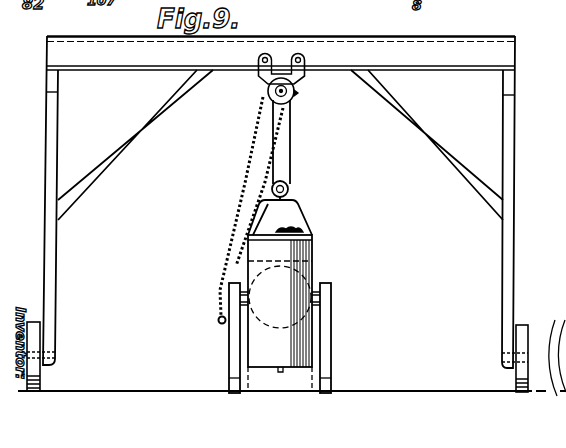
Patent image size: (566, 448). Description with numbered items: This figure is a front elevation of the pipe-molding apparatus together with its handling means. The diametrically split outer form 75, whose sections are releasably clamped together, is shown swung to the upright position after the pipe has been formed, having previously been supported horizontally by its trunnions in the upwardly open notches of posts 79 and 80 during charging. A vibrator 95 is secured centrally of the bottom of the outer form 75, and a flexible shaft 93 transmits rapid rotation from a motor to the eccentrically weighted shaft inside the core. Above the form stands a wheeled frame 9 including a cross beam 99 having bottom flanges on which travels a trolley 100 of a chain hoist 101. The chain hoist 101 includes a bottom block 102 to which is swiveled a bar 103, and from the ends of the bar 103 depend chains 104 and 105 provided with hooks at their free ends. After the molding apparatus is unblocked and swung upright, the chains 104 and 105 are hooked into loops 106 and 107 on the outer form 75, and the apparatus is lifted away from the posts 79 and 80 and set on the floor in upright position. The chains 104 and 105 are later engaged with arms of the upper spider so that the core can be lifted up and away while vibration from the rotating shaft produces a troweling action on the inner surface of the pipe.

The gantry post 9 is at (516, 97).
The cross beam 99 is at (476, 47).
The trolley 100 is at (298, 80).
The chain hoist 101 is at (291, 146).
The bottom block 102 is at (288, 189).
The bar 103 is at (285, 223).
The chain 104 is at (258, 212).
The chain 105 is at (300, 218).
The loop 106 is at (228, 262).
The flexible shaft 93 is at (313, 231).
The loop 107 is at (316, 250).
The outer form 75 is at (312, 262).
The post 79 is at (232, 330).
The post 80 is at (326, 334).
The vibrator 95 is at (360, 2).